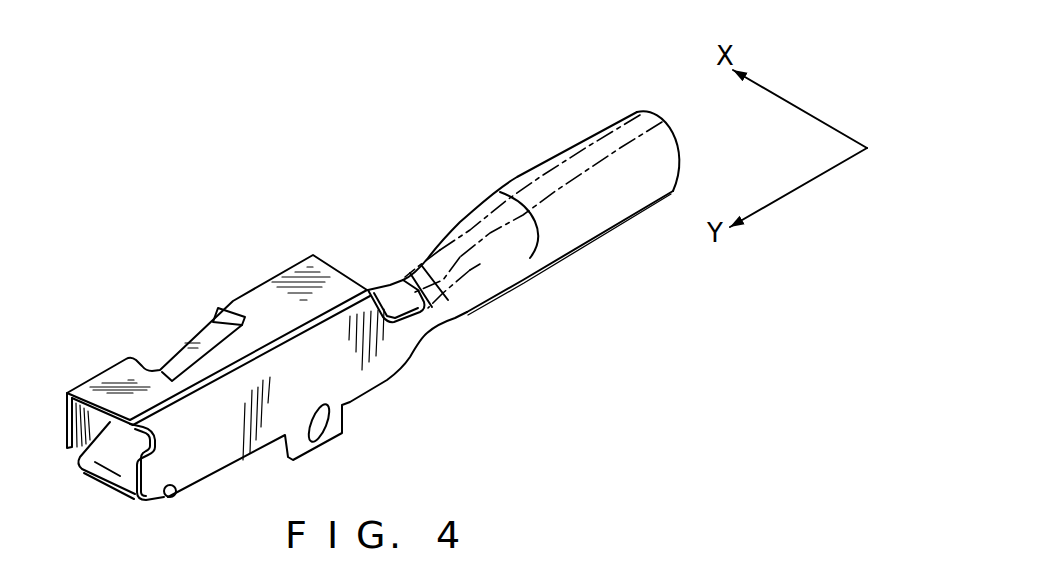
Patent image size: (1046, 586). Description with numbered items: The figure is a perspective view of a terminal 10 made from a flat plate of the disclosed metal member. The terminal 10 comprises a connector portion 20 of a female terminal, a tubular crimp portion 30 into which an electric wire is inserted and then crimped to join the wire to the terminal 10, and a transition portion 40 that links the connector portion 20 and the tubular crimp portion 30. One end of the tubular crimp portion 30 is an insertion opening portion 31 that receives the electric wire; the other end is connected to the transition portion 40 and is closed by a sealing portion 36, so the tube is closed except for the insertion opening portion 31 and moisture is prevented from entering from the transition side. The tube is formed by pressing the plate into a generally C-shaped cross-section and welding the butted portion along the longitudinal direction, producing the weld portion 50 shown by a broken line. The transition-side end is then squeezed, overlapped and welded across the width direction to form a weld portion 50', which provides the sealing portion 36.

The terminal 10 is at (497, 374).
The connector portion 20 is at (236, 292).
The tubular crimp portion 30 is at (641, 219).
The insertion opening portion 31 is at (679, 156).
The sealing portion 36 is at (457, 321).
The transition portion 40 is at (429, 343).
The weld portion 50 is at (551, 161).
The weld portion 50' is at (411, 245).